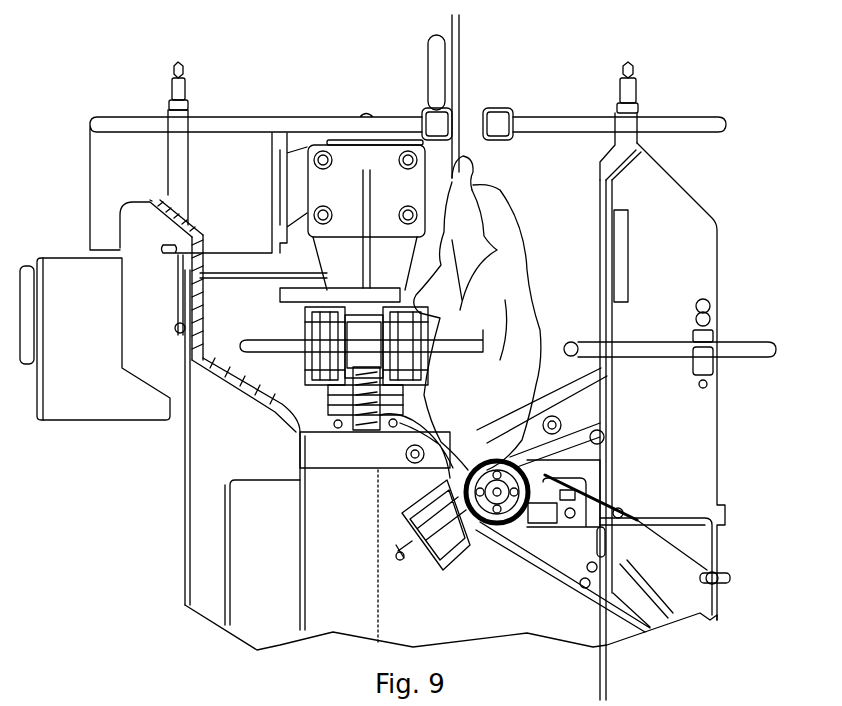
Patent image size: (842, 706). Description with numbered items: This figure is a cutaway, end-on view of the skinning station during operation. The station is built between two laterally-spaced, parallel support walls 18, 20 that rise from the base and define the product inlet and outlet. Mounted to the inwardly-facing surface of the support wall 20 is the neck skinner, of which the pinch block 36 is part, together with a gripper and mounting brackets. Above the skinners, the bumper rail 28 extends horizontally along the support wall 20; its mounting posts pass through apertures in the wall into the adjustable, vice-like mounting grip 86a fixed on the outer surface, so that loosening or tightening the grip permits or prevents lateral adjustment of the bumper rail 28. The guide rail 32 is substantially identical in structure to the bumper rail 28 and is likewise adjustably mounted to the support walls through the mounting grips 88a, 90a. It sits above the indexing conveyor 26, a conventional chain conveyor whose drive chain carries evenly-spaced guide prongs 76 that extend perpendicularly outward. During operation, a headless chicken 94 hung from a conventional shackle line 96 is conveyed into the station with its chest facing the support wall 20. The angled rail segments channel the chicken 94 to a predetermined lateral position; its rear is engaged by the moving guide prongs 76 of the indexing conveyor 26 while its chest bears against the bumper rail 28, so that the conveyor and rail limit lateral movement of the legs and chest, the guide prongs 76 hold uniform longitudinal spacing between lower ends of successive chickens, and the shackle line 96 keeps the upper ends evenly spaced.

The support wall 18 is at (133, 252).
The support wall 20 is at (676, 220).
The indexing conveyor 26 is at (370, 350).
The bumper rail 28 is at (725, 345).
The guide rail 32 is at (530, 125).
The pinch block 36 is at (280, 125).
The guide prongs 76 is at (312, 345).
The mounting grip 86a is at (704, 305).
The mounting grip 88a is at (175, 88).
The mounting grip 90a is at (628, 92).
The chicken carcass 94 is at (494, 272).
The shackle line 96 is at (455, 92).